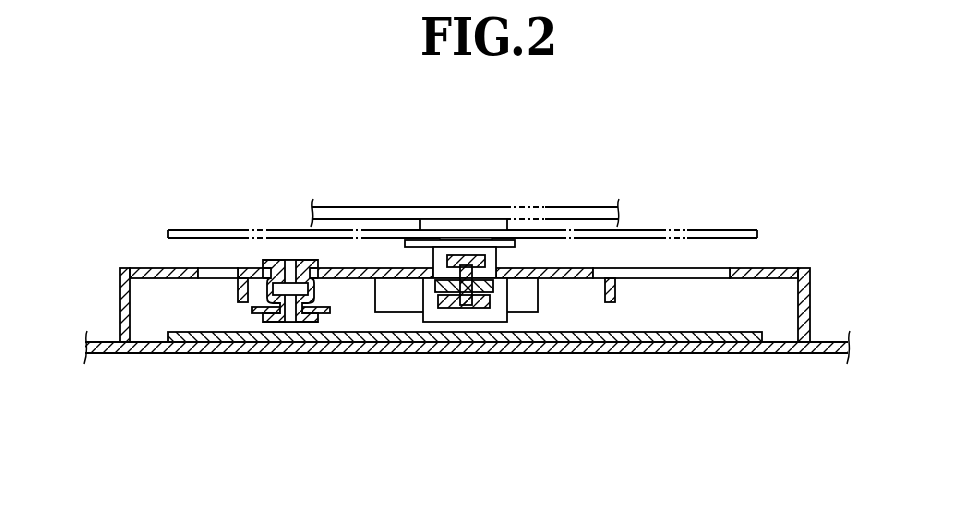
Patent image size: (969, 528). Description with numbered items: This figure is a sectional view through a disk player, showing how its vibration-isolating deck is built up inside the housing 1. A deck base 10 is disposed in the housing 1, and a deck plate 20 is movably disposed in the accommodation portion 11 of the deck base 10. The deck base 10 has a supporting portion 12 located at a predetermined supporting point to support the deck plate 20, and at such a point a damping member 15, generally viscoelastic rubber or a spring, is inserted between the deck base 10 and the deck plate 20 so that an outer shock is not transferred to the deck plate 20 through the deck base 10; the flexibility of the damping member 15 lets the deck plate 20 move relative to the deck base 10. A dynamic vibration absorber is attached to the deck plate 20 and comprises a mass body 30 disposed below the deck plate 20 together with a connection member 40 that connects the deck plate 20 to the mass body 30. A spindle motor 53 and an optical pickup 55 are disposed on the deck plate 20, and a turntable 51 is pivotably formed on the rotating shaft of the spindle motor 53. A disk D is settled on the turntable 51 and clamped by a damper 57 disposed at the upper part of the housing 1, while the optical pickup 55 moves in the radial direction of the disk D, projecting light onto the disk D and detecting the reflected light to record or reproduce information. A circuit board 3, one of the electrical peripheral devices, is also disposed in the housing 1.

The housing 1 is at (218, 352).
The circuit board 3 is at (657, 338).
The deck base 10 is at (760, 268).
The accommodation portion 11 is at (217, 272).
The supporting portion 12 is at (493, 295).
The damping member 15 is at (480, 312).
The deck plate 20 is at (590, 270).
The mass body 30 is at (322, 314).
The connection member 40 is at (274, 250).
The turntable 51 is at (408, 240).
The spindle motor 53 is at (460, 322).
The optical pickup 55 is at (403, 312).
The damper 57 is at (492, 207).
The disk D is at (289, 230).